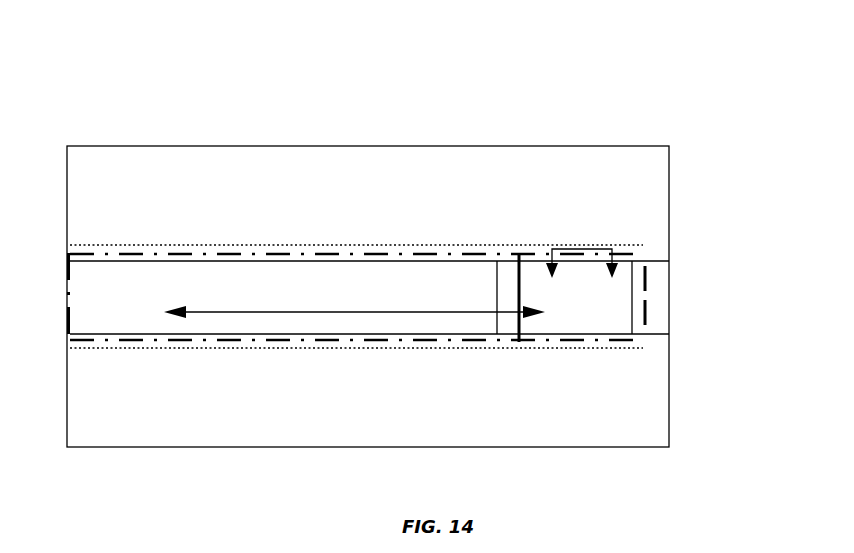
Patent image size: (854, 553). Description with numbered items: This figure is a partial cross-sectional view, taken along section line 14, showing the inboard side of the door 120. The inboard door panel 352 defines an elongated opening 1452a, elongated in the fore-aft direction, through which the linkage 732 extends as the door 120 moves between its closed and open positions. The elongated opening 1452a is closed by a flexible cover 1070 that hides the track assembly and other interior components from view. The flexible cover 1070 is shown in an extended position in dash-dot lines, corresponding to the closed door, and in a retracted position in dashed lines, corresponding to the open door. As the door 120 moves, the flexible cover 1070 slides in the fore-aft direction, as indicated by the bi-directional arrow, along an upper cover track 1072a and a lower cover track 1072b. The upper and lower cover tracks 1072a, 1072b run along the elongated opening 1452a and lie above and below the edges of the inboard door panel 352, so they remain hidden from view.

The door 120 is at (398, 266).
The inboard door panel 352 is at (315, 403).
The elongated opening 1452a is at (175, 262).
The flexible cover 1070 is at (299, 255).
The upper cover track 1072a is at (373, 247).
The lower cover track 1072b is at (383, 350).
The linkage 732 is at (508, 295).
The section line 14 is at (584, 277).